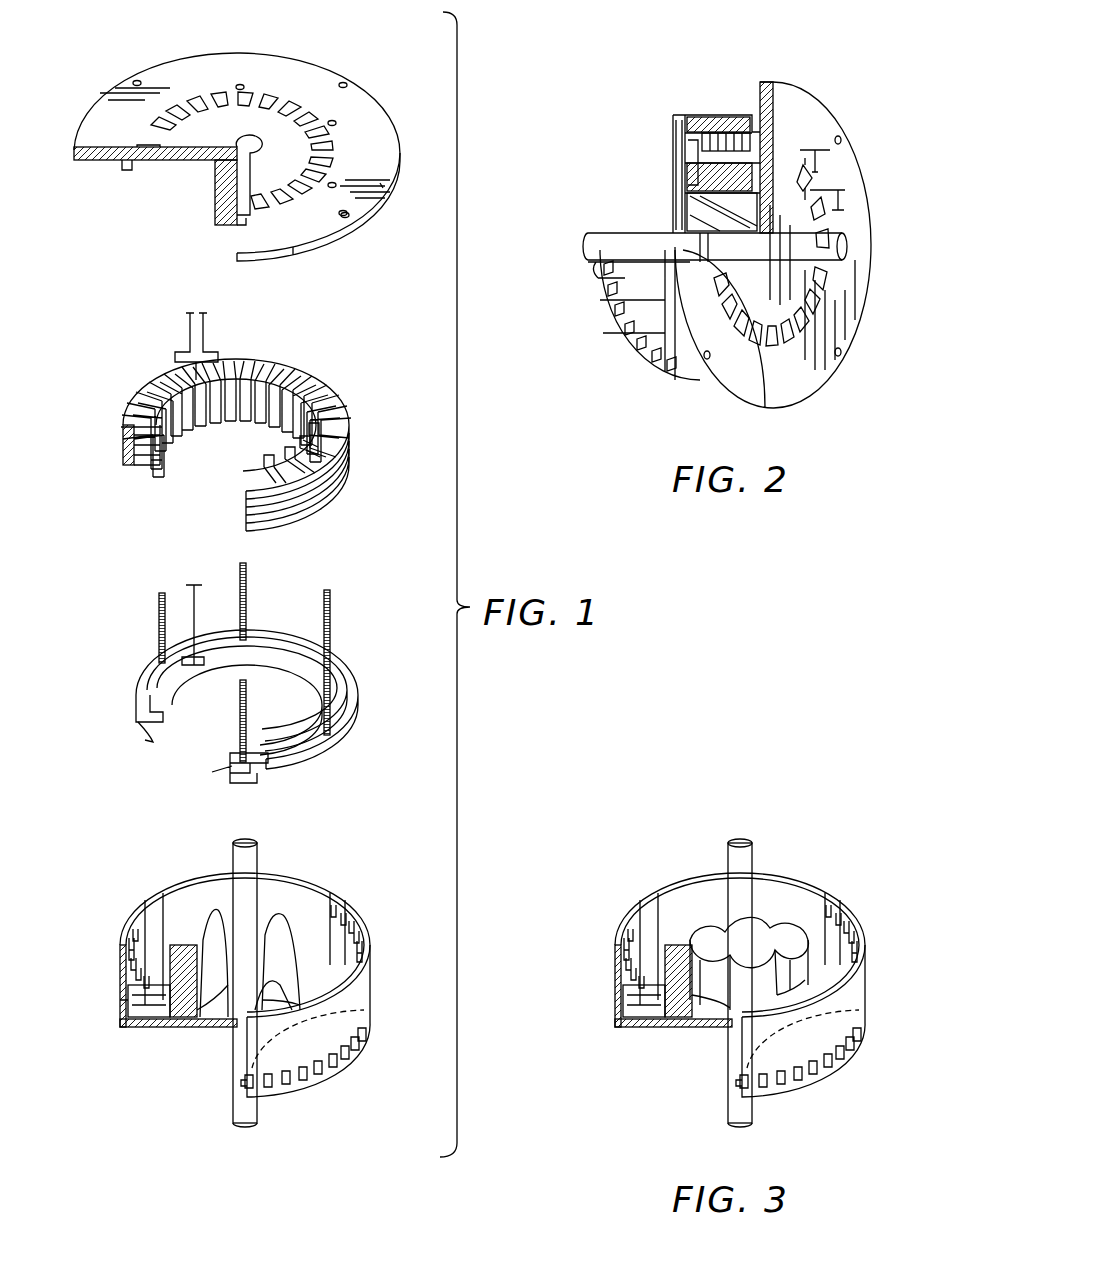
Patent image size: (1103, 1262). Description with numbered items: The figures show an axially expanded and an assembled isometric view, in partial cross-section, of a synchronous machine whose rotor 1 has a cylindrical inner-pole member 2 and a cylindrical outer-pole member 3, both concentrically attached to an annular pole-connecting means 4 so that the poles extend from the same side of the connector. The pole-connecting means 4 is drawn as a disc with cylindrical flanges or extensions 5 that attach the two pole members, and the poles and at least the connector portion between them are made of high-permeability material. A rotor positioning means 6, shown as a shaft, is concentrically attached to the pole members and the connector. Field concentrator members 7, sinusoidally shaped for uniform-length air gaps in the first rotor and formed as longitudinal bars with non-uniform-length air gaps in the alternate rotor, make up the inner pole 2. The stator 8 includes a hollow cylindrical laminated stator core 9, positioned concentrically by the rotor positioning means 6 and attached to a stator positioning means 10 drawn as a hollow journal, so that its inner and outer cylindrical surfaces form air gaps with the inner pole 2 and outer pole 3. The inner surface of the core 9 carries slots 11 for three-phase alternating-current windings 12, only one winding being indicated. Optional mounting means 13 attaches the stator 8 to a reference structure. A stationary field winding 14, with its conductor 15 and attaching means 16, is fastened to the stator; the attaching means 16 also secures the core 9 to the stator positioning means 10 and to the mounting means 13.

In FIG. 1, the rotor 1 is at (140, 888).
In FIG. 2, the rotor 1 is at (608, 345).
In FIG. 3, the rotor 1 is at (648, 886).
In FIG. 1, the inner-pole member 2 is at (315, 913).
In FIG. 2, the inner-pole member 2 is at (722, 187).
In FIG. 3, the inner-pole member 2 is at (815, 906).
In FIG. 1, the outer-pole member 3 is at (348, 908).
In FIG. 2, the outer-pole member 3 is at (748, 113).
In FIG. 3, the outer-pole member 3 is at (790, 878).
In FIG. 1, the pole-connecting means 4 is at (137, 1030).
In FIG. 2, the pole-connecting means 4 is at (676, 130).
In FIG. 3, the pole-connecting means 4 is at (637, 1030).
In FIG. 1, the extensions 5 is at (128, 1000).
In FIG. 2, the extensions 5 is at (700, 115).
In FIG. 3, the extensions 5 is at (623, 1000).
In FIG. 1, the rotor positioning means 6 is at (249, 842).
In FIG. 2, the rotor positioning means 6 is at (850, 246).
In FIG. 3, the rotor positioning means 6 is at (744, 842).
In FIG. 1, the field concentrator members 7 is at (288, 905).
In FIG. 3, the field concentrator members 7 is at (815, 920).
In FIG. 1, the stator 8 is at (140, 60).
In FIG. 2, the stator 8 is at (812, 100).
In FIG. 1, the stator core 9 is at (322, 375).
In FIG. 2, the stator core 9 is at (722, 150).
In FIG. 1, the stator positioning means 10 is at (216, 197).
In FIG. 2, the stator positioning means 10 is at (704, 240).
In FIG. 1, the slots 11 is at (326, 404).
In FIG. 1, the alternating-current windings 12 is at (189, 333).
In FIG. 2, the alternating-current windings 12 is at (848, 192).
In FIG. 1, the mounting means 13 is at (340, 216).
In FIG. 2, the mounting means 13 is at (844, 352).
In FIG. 1, the stationary field winding 14 is at (356, 692).
In FIG. 1, the conductor 15 is at (190, 600).
In FIG. 2, the conductor 15 is at (818, 150).
In FIG. 1, the attaching means 16 is at (332, 620).